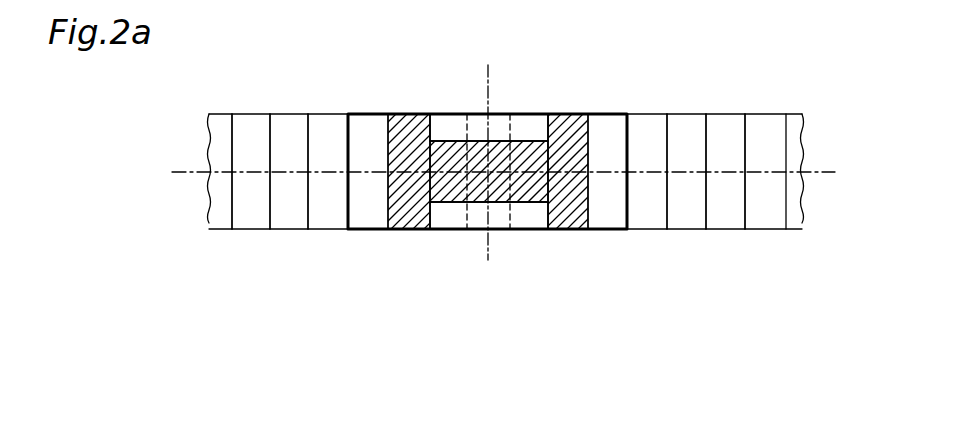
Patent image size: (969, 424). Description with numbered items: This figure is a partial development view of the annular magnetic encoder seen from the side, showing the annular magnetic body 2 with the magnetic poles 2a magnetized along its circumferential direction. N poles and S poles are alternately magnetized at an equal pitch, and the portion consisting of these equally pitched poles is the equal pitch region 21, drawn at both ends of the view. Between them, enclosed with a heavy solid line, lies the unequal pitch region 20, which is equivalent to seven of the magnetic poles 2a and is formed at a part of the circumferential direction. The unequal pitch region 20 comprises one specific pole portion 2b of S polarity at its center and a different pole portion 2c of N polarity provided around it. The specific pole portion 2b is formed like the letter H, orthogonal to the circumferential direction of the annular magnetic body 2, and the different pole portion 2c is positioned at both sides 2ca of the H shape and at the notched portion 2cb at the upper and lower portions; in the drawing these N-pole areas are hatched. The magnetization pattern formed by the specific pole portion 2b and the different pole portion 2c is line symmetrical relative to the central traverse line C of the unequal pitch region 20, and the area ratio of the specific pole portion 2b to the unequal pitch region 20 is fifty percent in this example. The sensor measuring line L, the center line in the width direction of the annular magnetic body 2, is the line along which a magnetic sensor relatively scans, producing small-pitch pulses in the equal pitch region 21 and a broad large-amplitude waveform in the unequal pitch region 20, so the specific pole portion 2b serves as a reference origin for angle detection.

The annular magnetic body 2 is at (507, 197).
The magnetic poles 2a is at (318, 122).
The specific pole portion 2b is at (447, 203).
The different pole portion 2c is at (483, 207).
The both sides 2ca is at (372, 220).
The notched portion 2cb is at (437, 203).
The unequal pitch region 20 is at (658, 297).
The equal pitch region 21 is at (348, 238).
The central traverse line C is at (490, 84).
The sensor measuring line L is at (813, 170).